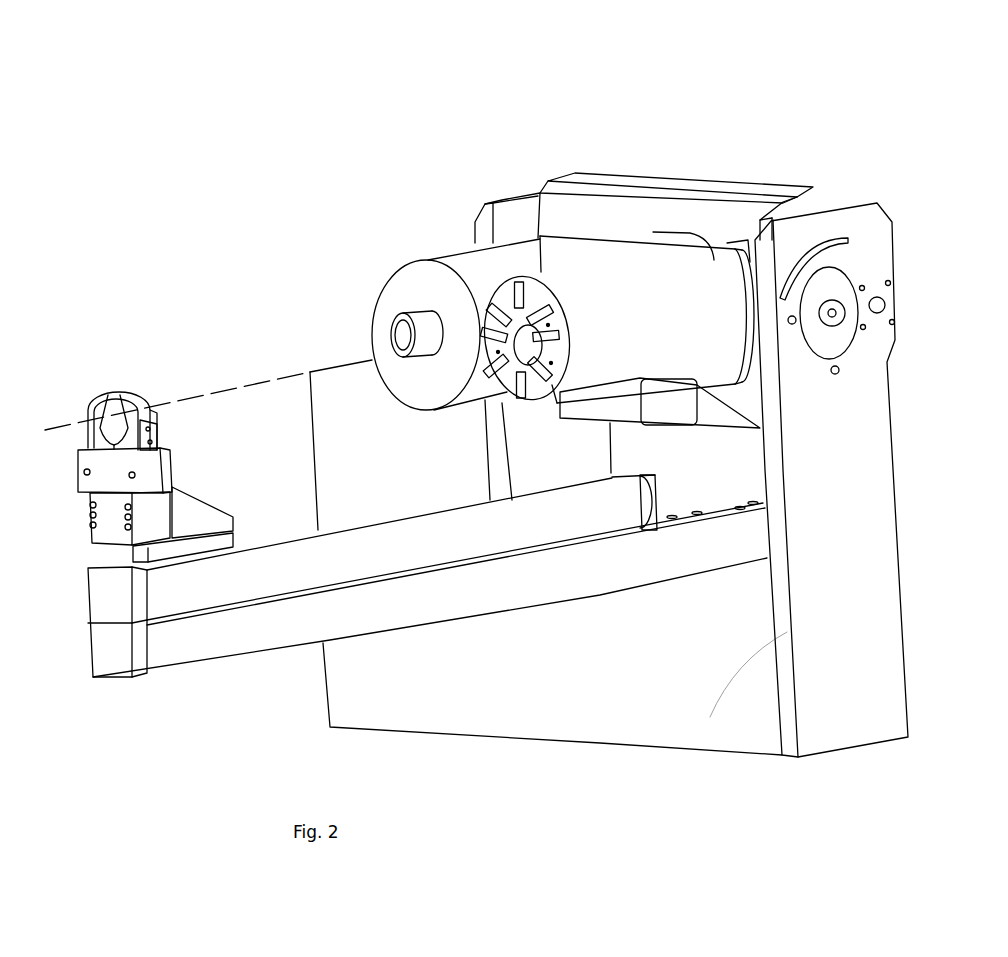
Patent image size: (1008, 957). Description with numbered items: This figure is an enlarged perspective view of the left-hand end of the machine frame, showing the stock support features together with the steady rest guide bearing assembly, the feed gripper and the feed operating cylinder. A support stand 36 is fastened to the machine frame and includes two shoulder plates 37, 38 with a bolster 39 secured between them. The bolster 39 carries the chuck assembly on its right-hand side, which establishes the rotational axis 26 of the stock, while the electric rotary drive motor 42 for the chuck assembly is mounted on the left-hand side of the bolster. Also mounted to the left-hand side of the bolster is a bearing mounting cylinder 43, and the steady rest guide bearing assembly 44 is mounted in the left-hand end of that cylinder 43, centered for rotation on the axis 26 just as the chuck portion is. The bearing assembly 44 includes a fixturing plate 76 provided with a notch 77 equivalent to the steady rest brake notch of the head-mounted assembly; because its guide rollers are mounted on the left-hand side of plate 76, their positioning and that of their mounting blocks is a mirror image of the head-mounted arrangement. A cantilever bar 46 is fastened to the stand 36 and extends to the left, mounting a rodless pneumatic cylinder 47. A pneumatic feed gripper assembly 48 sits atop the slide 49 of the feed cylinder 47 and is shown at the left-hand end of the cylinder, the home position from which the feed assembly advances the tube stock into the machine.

The rotational axis 26 is at (260, 390).
The support stand 36 is at (548, 388).
The shoulder plate 37 is at (875, 227).
The shoulder plate 38 is at (500, 227).
The bolster 39 is at (667, 222).
The electric rotary drive motor 42 is at (386, 307).
The bearing mounting cylinder 43 is at (602, 283).
The steady rest guide bearing assembly 44 is at (526, 430).
The cantilever bar 46 is at (288, 630).
The rodless pneumatic cylinder 47 is at (552, 520).
The pneumatic feed gripper assembly 48 is at (155, 388).
The slide 49 is at (188, 552).
The fixturing plate 76 is at (497, 297).
The notch 77 is at (538, 238).